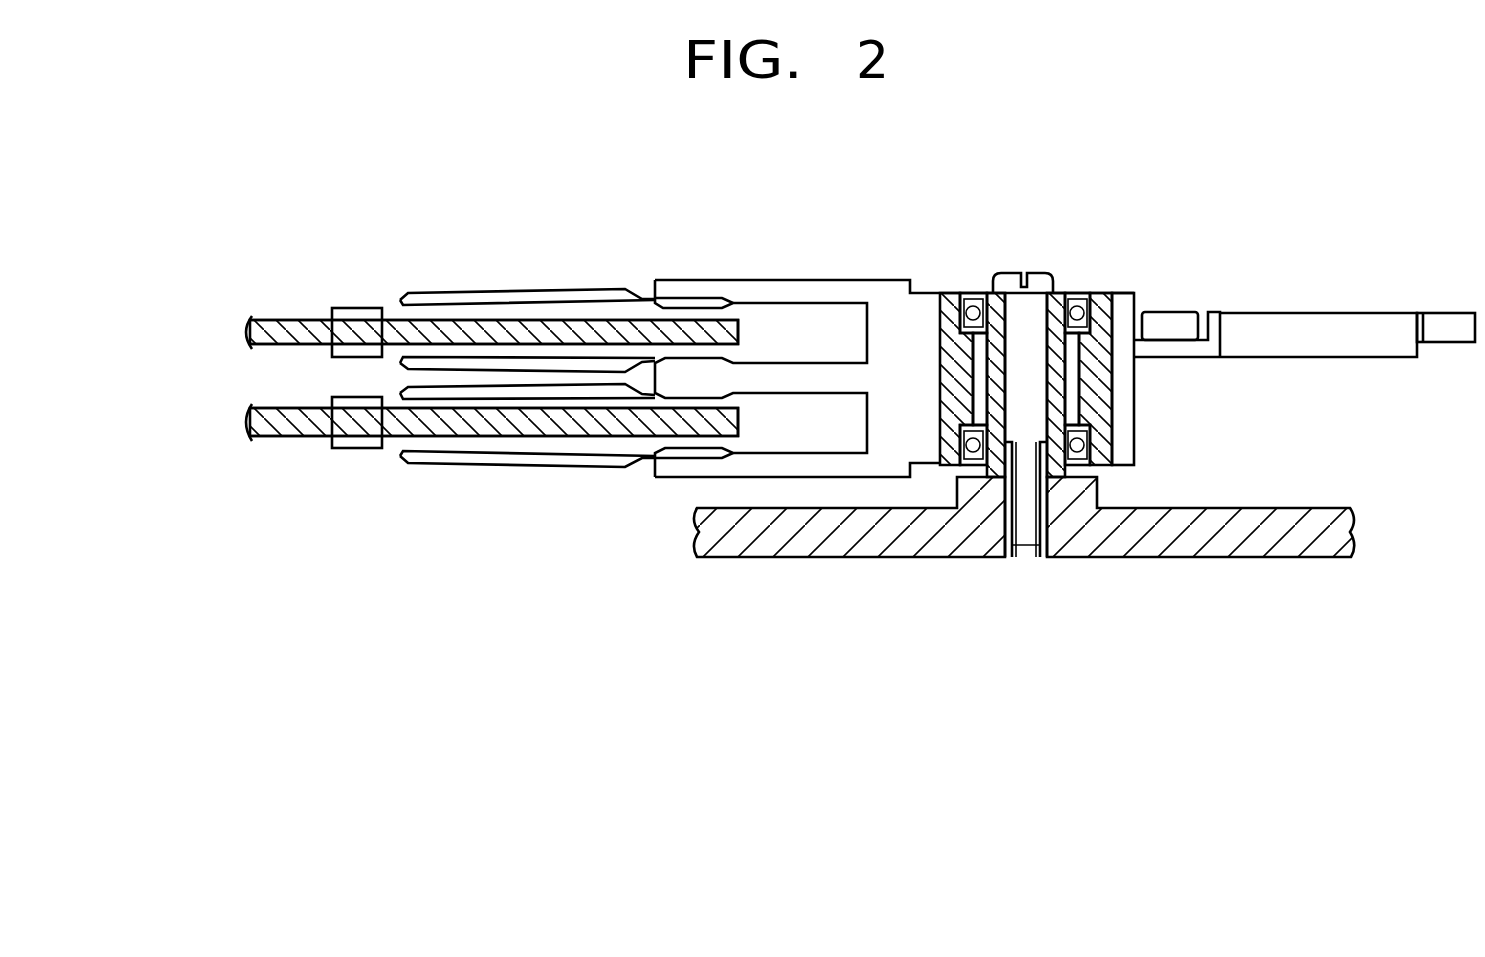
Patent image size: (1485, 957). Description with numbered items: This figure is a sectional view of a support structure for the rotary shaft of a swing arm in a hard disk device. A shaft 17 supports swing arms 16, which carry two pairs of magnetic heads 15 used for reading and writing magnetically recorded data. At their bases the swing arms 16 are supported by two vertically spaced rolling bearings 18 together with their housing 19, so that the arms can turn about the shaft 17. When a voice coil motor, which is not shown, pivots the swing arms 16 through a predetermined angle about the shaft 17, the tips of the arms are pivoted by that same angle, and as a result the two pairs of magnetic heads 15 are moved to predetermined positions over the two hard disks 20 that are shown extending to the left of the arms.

The magnetic heads 15 is at (338, 348).
The swing arms 16 is at (780, 282).
The shaft 17 is at (988, 292).
The rolling bearings 18 is at (1083, 292).
The housing 19 is at (950, 293).
The hard disks 20 is at (303, 415).